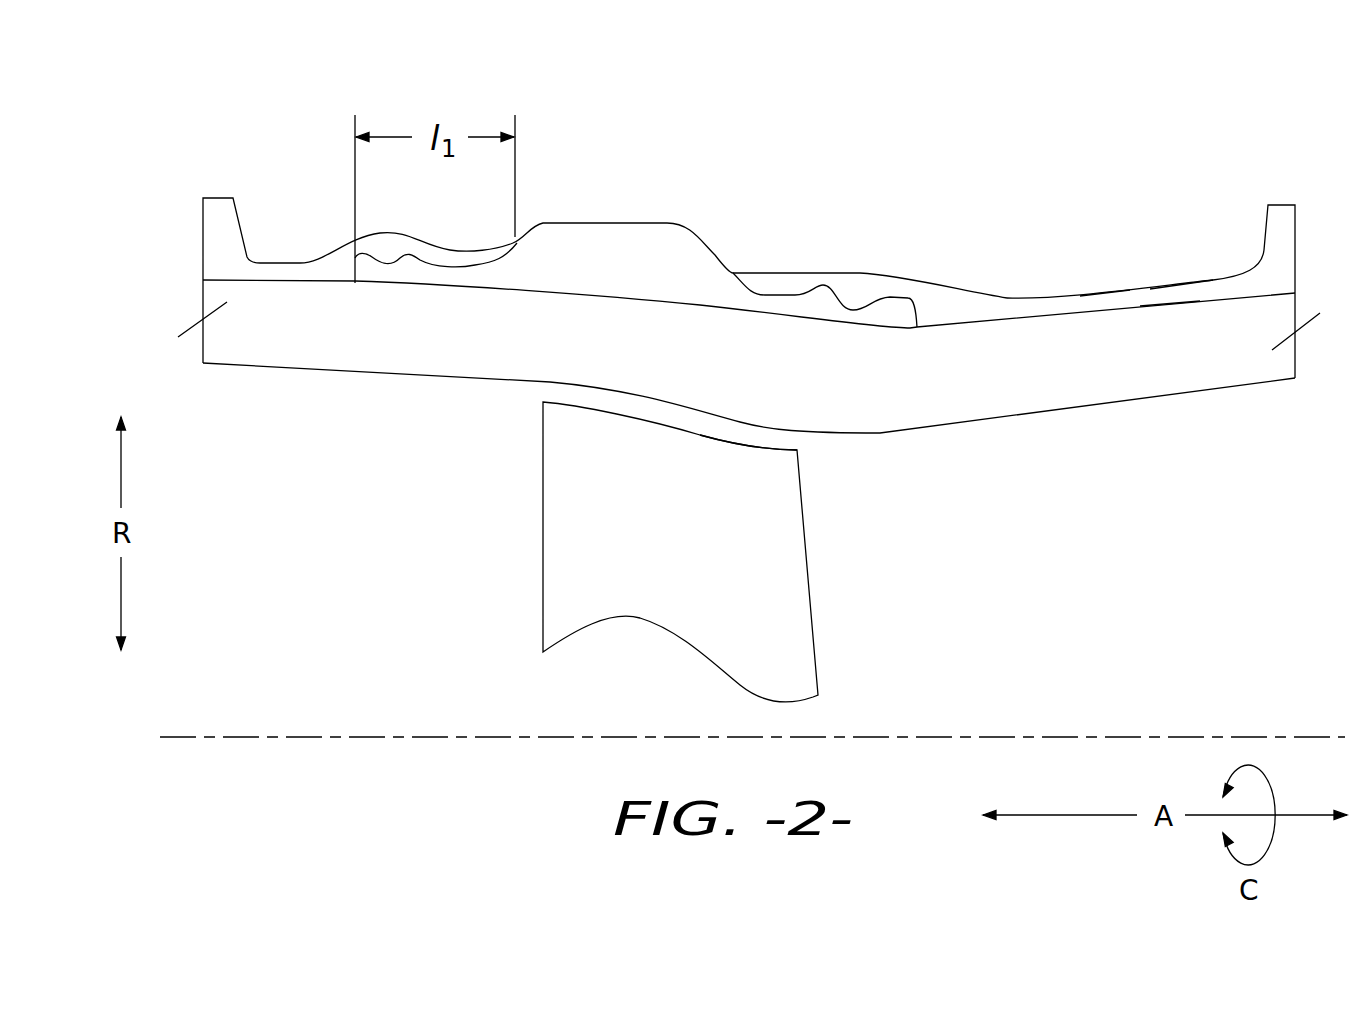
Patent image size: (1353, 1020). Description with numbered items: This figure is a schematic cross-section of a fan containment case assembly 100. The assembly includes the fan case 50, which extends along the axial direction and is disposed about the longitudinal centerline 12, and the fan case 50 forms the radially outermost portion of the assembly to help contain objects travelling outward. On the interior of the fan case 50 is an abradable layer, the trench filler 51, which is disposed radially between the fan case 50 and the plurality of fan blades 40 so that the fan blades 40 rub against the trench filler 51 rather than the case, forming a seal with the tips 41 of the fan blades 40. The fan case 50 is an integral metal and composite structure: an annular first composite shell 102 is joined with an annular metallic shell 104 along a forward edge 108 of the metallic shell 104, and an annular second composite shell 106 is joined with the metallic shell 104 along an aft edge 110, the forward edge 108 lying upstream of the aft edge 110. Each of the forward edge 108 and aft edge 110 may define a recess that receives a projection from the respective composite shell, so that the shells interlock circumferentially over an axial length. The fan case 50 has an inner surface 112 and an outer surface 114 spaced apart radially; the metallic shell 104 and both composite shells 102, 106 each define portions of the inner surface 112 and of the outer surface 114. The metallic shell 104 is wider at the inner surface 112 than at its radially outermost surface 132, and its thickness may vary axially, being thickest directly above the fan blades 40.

The fan containment case assembly 100 is at (272, 115).
The first composite shell 102 is at (297, 272).
The forward edge 108 is at (387, 248).
The radially outermost surface 132 is at (640, 222).
The metallic shell 104 is at (695, 260).
The fan case 50 is at (827, 207).
The aft edge 110 is at (867, 297).
The second composite shell 106 is at (1020, 312).
The trench filler 51 is at (1113, 337).
The outer surface 114 is at (1170, 277).
The inner surface 112 is at (1170, 313).
The fan blades 40 is at (793, 613).
The tips 41 is at (777, 438).
The longitudinal centerline 12 is at (1097, 735).